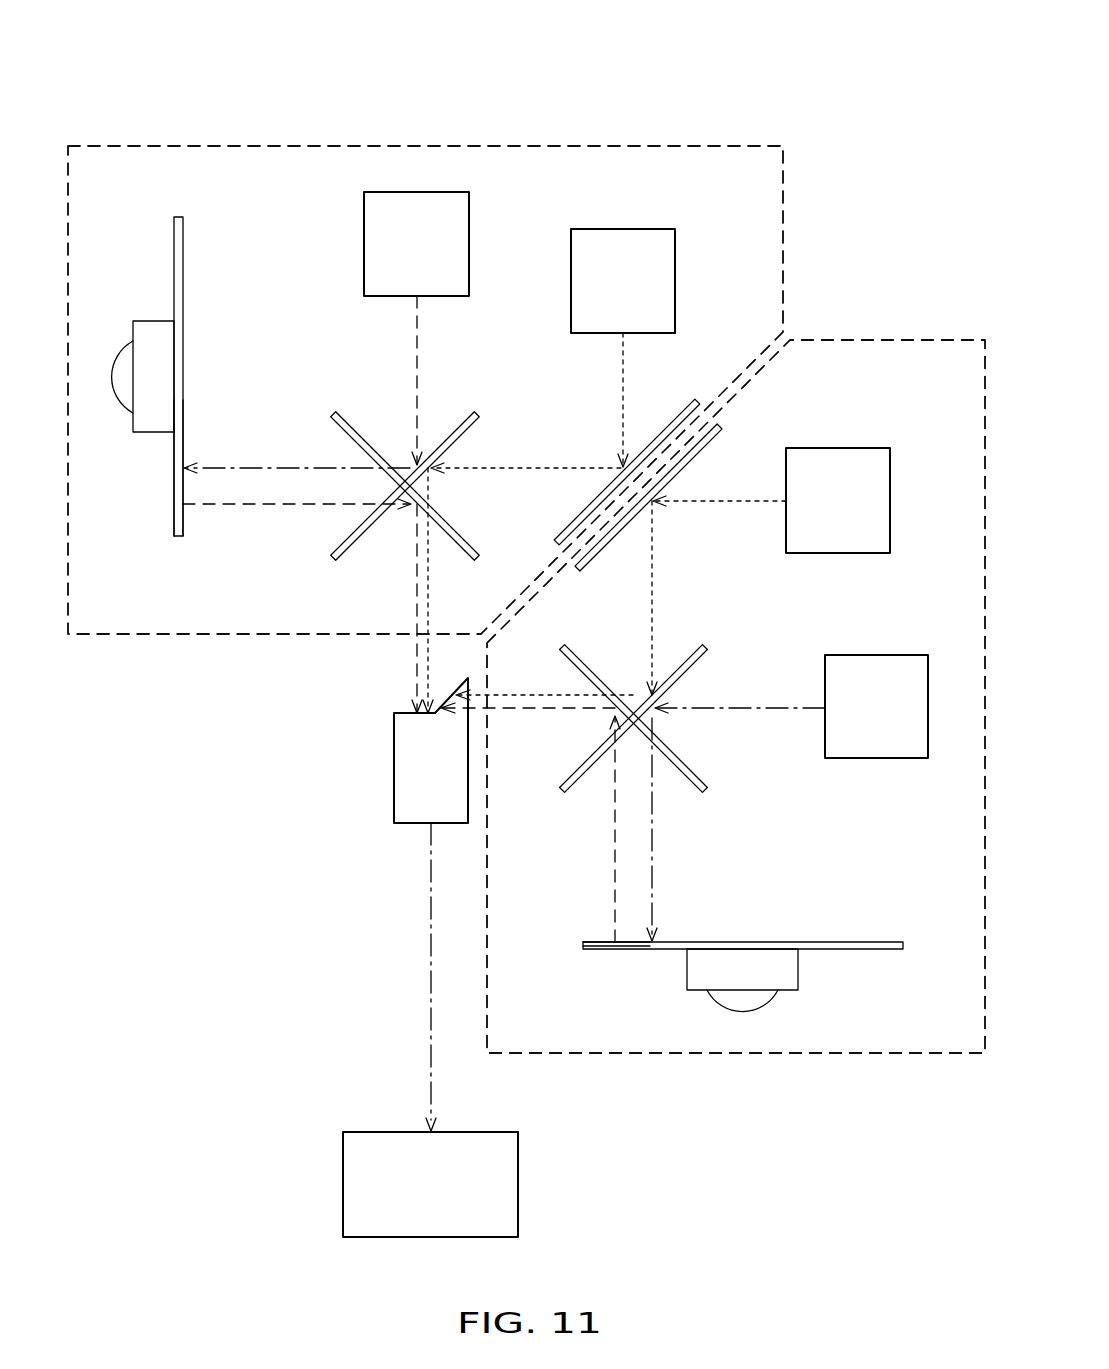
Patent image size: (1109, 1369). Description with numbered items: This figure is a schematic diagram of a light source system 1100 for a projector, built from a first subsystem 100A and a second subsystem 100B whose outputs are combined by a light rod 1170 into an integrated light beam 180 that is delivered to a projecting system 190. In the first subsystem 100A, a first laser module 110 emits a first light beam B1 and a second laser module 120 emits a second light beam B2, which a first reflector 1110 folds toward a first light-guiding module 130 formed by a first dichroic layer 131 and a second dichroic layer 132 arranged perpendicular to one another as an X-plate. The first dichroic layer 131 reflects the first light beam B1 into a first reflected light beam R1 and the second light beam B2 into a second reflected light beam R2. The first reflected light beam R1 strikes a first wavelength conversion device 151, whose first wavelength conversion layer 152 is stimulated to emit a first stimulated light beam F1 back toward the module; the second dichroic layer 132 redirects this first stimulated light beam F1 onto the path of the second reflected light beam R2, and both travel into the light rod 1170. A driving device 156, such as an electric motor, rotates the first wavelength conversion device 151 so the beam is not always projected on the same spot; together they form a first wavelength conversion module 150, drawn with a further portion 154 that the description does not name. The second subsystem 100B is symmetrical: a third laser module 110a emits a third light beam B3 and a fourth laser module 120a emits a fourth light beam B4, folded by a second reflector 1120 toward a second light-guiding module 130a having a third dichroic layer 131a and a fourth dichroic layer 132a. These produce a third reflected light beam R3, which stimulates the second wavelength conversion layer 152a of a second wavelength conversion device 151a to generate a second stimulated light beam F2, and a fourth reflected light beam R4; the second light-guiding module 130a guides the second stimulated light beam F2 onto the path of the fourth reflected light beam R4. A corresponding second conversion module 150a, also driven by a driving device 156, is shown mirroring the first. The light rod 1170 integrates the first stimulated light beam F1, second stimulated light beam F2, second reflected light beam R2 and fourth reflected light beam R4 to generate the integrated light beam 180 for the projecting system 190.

The light source system 1100 is at (238, 78).
The first subsystem 100A is at (447, 146).
The second subsystem 100B is at (897, 340).
The first laser module 110 is at (469, 245).
The second laser module 120 is at (622, 229).
The third laser module 110a is at (846, 655).
The fourth laser module 120a is at (890, 500).
The first light-guiding module 130 is at (392, 416).
The first dichroic layer 131 is at (477, 415).
The second dichroic layer 132 is at (333, 415).
The second light-guiding module 130a is at (732, 727).
The third dichroic layer 131a is at (705, 647).
The fourth dichroic layer 132a is at (705, 790).
The first wavelength conversion module 150 is at (158, 258).
The first wavelength conversion device 151 is at (178, 217).
The first wavelength conversion layer 152 is at (185, 522).
The reflective region 154 is at (173, 522).
The driving device 156 is at (152, 330).
The second wavelength conversion module 150a is at (872, 966).
The second wavelength conversion device 151a is at (903, 946).
The second wavelength conversion layer 152a is at (596, 940).
The first reflector 1110 is at (698, 402).
The second reflector 1120 is at (720, 427).
The light rod 1170 is at (394, 748).
The integrated light beam 180 is at (431, 1018).
The projecting system 190 is at (518, 1182).
The first light beam B1 is at (418, 319).
The second light beam B2 is at (623, 418).
The third light beam B3 is at (760, 708).
The fourth light beam B4 is at (726, 502).
The first reflected light beam R1 is at (248, 468).
The second reflected light beam R2 is at (430, 578).
The third reflected light beam R3 is at (652, 900).
The fourth reflected light beam R4 is at (543, 693).
The first stimulated light beam F1 is at (244, 505).
The second stimulated light beam F2 is at (540, 710).